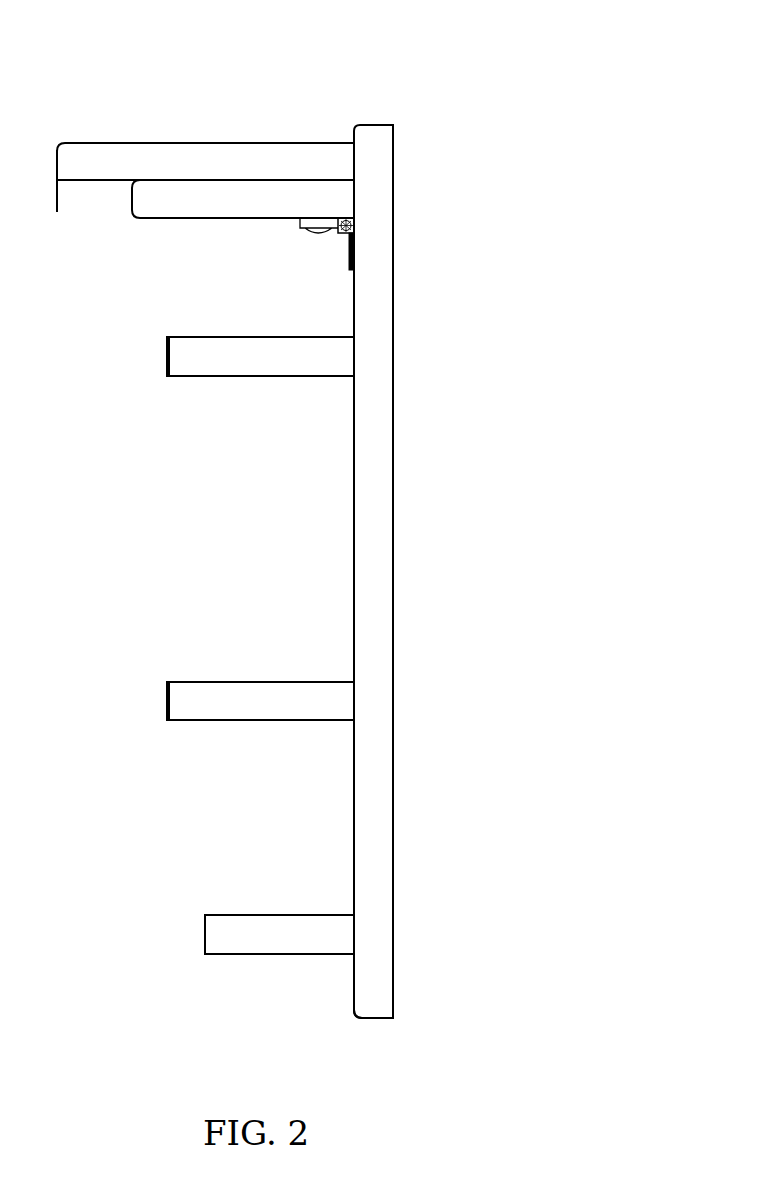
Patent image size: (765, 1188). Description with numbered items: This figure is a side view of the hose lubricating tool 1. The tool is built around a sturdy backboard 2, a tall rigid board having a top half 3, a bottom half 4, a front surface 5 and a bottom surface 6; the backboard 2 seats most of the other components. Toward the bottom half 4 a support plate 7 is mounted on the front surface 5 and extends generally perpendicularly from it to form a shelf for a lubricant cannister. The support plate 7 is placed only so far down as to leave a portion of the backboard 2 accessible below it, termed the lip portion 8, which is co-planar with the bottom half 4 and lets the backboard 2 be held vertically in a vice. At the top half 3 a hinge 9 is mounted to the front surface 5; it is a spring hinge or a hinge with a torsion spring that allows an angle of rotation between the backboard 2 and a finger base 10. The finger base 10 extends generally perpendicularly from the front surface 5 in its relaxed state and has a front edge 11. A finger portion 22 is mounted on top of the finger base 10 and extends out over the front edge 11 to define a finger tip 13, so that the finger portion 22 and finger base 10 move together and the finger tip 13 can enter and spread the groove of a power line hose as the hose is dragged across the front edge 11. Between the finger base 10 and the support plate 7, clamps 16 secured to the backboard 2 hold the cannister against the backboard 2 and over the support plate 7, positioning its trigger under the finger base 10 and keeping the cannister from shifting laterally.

The hose lubricating tool 1 is at (387, 163).
The backboard 2 is at (379, 239).
The top half 3 is at (373, 318).
The bottom half 4 is at (372, 882).
The front surface 5 is at (355, 528).
The bottom surface 6 is at (393, 710).
The support plate 7 is at (261, 929).
The lip portion 8 is at (365, 987).
The hinge 9 is at (347, 240).
The finger base 10 is at (218, 207).
The front edge 11 is at (61, 201).
The finger tip 13 is at (98, 162).
The clamps 16 is at (245, 364).
The finger portion 22 is at (258, 165).